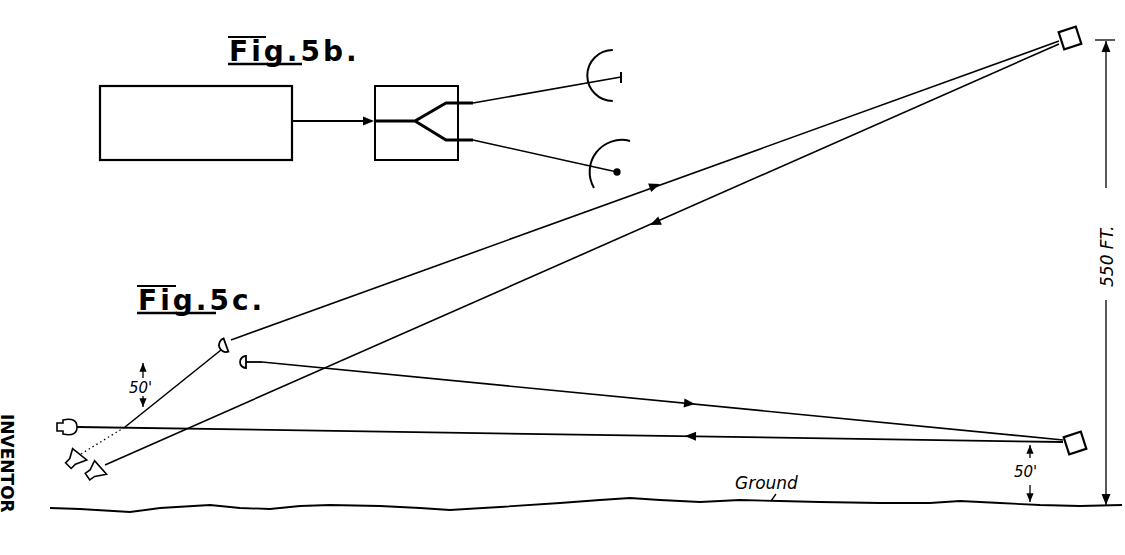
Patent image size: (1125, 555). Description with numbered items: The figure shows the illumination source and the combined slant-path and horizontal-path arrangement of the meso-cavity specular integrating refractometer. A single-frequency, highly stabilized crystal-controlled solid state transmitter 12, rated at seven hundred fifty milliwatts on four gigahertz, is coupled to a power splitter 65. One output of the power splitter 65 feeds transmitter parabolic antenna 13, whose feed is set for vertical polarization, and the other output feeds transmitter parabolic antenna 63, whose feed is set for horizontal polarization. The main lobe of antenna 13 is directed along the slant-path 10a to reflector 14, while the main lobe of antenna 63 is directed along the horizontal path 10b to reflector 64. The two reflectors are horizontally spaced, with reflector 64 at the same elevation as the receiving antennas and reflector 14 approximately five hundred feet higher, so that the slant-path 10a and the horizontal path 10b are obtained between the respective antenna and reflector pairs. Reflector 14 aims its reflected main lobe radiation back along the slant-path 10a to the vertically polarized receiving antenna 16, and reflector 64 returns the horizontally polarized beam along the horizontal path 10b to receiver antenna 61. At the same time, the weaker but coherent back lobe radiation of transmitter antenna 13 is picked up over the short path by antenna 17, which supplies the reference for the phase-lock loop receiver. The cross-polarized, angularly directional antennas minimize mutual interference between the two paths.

In FIG. 5B, the crystal-controlled solid state transmitter 12 is at (214, 82).
In FIG. 5B, the power splitter 65 is at (446, 74).
In FIG. 5B, the transmitter parabolic antenna 13 is at (600, 58).
In FIG. 5C, the transmitter parabolic antenna 13 is at (219, 345).
In FIG. 5B, the transmitter parabolic antenna 63 is at (590, 176).
In FIG. 5C, the transmitter parabolic antenna 63 is at (251, 357).
In FIG. 5C, the reflector 14 is at (1078, 30).
In FIG. 5C, the reflector 64 is at (1073, 454).
In FIG. 5C, the receiver antenna 61 is at (80, 421).
In FIG. 5C, the vertically polarized antenna 16 is at (100, 478).
In FIG. 5C, the antenna 17 is at (69, 472).
In FIG. 5C, the slant-path 10a is at (757, 148).
In FIG. 5C, the horizontal path 10b is at (781, 410).